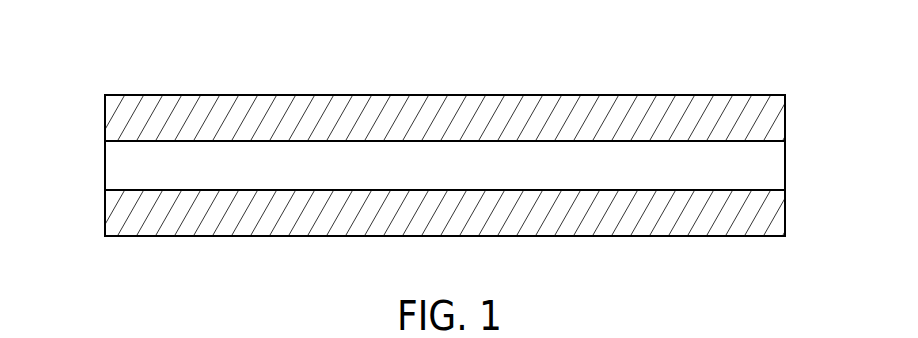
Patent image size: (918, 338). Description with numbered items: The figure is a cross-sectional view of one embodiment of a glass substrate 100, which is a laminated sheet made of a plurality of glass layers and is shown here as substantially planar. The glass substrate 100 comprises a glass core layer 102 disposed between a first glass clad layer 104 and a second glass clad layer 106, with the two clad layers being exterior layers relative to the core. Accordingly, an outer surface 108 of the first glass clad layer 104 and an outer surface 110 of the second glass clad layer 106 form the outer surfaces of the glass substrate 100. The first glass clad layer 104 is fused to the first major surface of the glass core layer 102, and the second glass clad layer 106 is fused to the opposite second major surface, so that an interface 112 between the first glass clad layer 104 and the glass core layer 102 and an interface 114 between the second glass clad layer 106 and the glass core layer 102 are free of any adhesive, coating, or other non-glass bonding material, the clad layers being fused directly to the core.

The glass substrate 100 is at (92, 95).
The glass core layer 102 is at (785, 166).
The first glass clad layer 104 is at (785, 120).
The second glass clad layer 106 is at (785, 213).
The outer surface 108 is at (224, 95).
The outer surface 110 is at (224, 236).
The interface 112 is at (290, 141).
The interface 114 is at (390, 193).